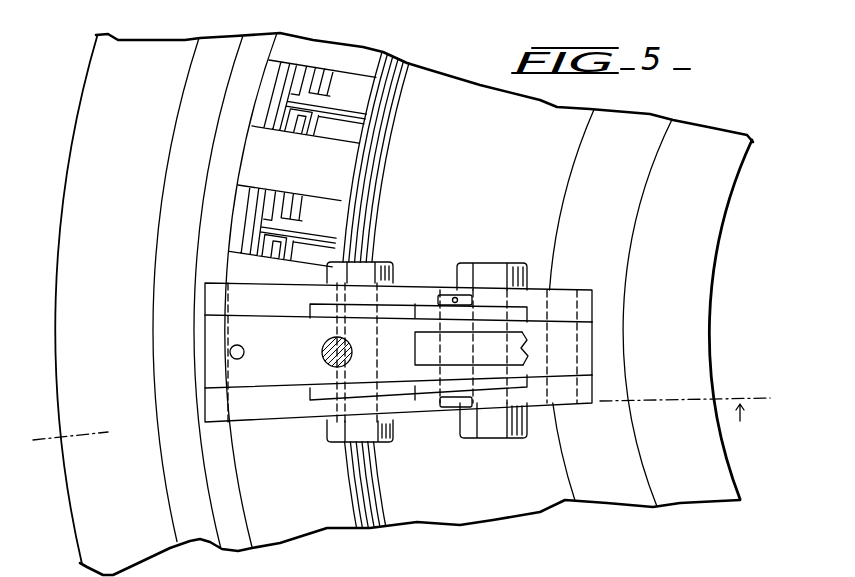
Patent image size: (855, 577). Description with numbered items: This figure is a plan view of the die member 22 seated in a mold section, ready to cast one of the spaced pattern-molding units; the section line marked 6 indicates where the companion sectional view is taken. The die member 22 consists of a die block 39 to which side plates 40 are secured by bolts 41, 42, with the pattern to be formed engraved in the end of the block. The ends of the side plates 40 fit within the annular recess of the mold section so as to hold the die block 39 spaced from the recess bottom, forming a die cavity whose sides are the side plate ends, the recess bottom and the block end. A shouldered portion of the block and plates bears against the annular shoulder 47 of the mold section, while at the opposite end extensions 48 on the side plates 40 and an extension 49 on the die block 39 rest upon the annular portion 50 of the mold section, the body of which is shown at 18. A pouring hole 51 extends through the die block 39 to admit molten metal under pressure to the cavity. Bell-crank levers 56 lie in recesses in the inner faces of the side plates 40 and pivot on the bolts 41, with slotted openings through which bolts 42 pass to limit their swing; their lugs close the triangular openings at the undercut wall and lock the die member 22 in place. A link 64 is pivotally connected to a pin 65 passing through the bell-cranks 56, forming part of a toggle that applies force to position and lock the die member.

The drum 18 is at (404, 304).
The die member 22 is at (585, 341).
The die block 39 is at (585, 359).
The side plates 40 is at (565, 298).
The bolts 41 is at (488, 268).
The bolts 42 is at (386, 214).
The annular shoulder 47 is at (557, 176).
The extensions 48 is at (212, 297).
The extension 49 is at (214, 340).
The annular portion 50 is at (237, 511).
The pouring hole 51 is at (229, 353).
The bell-crank levers 56 is at (403, 305).
The link 64 is at (515, 355).
The pin 65 is at (448, 295).
The section line 6 is at (400, 435).